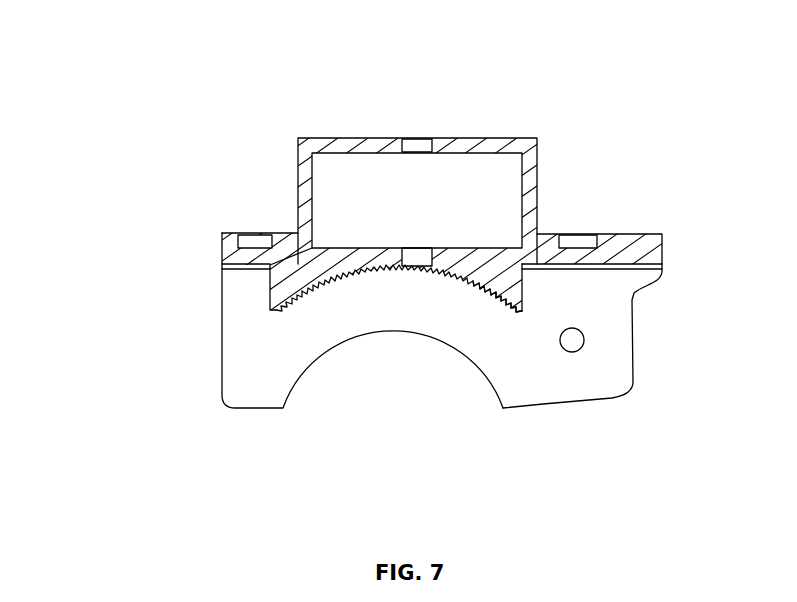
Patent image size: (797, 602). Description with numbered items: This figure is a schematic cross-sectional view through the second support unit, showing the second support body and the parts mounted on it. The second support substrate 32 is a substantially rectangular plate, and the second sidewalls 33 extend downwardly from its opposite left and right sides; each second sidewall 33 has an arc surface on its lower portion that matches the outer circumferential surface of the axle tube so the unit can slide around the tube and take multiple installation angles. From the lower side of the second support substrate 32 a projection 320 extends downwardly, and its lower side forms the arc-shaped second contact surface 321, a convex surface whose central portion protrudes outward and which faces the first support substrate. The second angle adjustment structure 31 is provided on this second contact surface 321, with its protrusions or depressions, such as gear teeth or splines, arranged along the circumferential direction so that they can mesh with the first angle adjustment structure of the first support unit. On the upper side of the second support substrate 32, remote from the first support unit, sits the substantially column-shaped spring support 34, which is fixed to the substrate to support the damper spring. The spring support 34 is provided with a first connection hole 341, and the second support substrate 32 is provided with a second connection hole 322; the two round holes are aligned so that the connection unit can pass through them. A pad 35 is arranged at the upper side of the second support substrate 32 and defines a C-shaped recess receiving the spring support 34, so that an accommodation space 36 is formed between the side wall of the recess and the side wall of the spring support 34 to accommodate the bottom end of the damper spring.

The second angle adjustment structure 31 is at (468, 271).
The second support substrate 32 is at (653, 265).
The second sidewall 33 is at (248, 357).
The spring support 34 is at (508, 145).
The pad 35 is at (233, 240).
The accommodation space 36 is at (585, 240).
The projection 320 is at (292, 267).
The second contact surface 321 is at (517, 308).
The second connection hole 322 is at (417, 258).
The first connection hole 341 is at (418, 145).